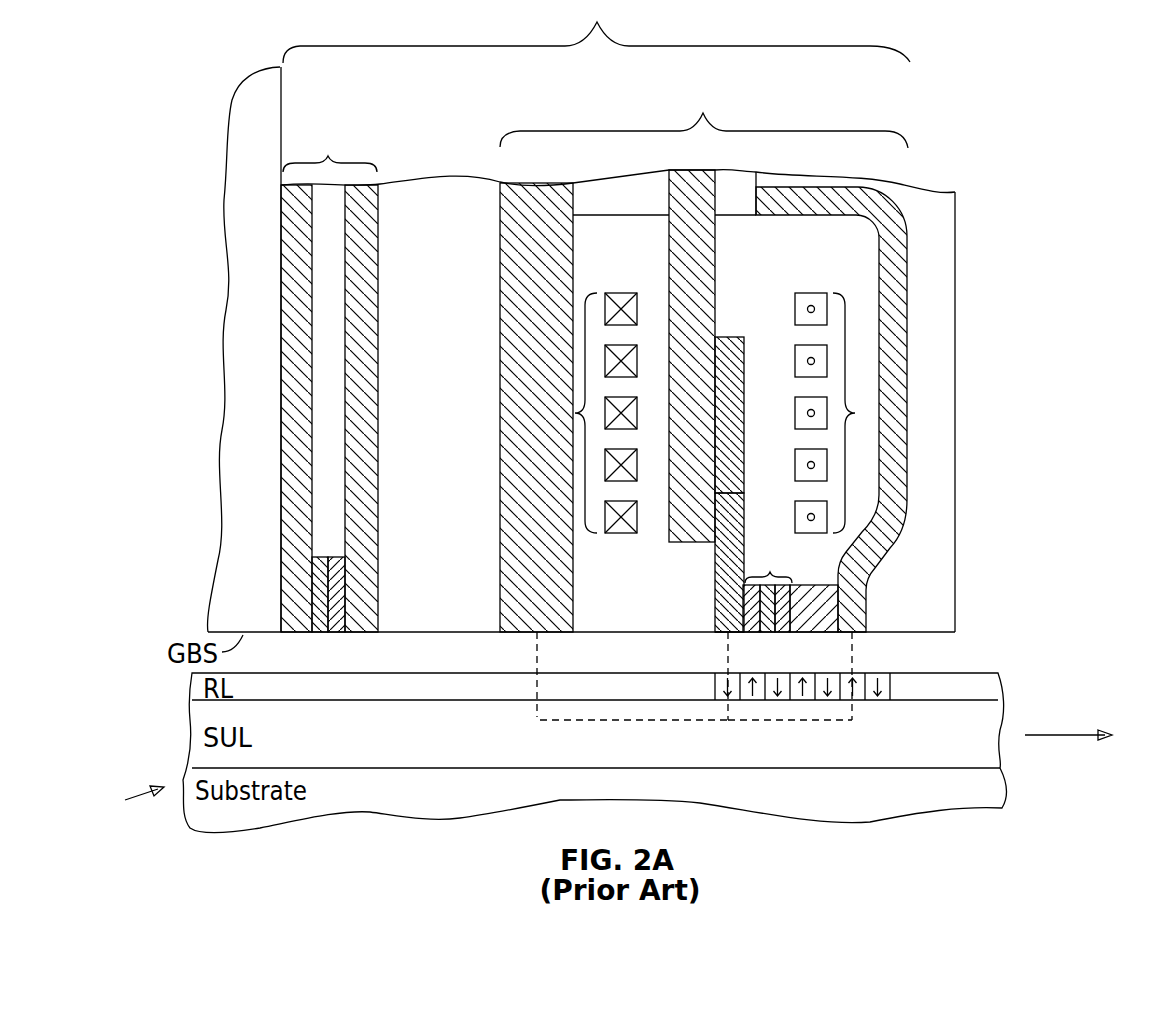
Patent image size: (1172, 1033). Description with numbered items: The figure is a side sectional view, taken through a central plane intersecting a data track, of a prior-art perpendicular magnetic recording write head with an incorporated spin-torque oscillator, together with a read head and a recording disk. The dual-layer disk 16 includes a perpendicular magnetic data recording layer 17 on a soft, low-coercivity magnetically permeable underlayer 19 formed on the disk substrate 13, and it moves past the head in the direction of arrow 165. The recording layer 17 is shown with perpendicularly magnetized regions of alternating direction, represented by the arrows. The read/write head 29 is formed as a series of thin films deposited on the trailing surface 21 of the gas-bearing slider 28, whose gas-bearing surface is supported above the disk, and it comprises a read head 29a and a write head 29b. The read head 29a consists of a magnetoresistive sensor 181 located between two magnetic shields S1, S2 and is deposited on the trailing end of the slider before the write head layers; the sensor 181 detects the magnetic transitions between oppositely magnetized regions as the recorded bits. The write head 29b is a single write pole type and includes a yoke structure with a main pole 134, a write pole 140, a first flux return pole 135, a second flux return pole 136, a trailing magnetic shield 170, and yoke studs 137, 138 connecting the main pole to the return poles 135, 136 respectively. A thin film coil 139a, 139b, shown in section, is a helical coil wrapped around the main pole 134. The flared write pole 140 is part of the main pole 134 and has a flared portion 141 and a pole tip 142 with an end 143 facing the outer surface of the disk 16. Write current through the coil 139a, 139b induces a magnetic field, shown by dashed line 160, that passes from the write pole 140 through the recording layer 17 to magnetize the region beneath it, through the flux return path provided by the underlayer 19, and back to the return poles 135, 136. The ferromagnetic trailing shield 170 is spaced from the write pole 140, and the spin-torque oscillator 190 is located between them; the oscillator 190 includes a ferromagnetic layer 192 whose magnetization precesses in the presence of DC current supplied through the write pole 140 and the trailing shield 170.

The read/write head 29 is at (596, 31).
The trailing surface 21 is at (283, 98).
The slider 28 is at (230, 133).
The read head 29a is at (330, 148).
The write head 29b is at (704, 115).
The magnetic shield S1 is at (292, 470).
The magnetic shield S2 is at (365, 475).
The magnetoresistive read sensor 181 is at (332, 633).
The first flux return pole 135 is at (512, 258).
The yoke stud 137 is at (586, 188).
The main pole 134 is at (683, 258).
The yoke stud 138 is at (742, 177).
The flared portion 141 is at (718, 553).
The pole tip 142 is at (715, 617).
The write pole 140 is at (720, 337).
The end 143 is at (718, 635).
The thin film coil 139a is at (577, 413).
The thin film coil 139b is at (858, 414).
The second flux return pole 136 is at (895, 455).
The spin-torque oscillator 190 is at (768, 587).
The ferromagnetic layer 192 is at (765, 633).
The trailing magnetic shield 170 is at (830, 603).
The magnetic field 160 is at (854, 663).
The perpendicular magnetic data recording layer 17 is at (998, 690).
The soft underlayer 19 is at (998, 727).
The disk substrate 13 is at (1006, 790).
The arrow 165 is at (1072, 725).
The dual-layer disk 16 is at (126, 804).